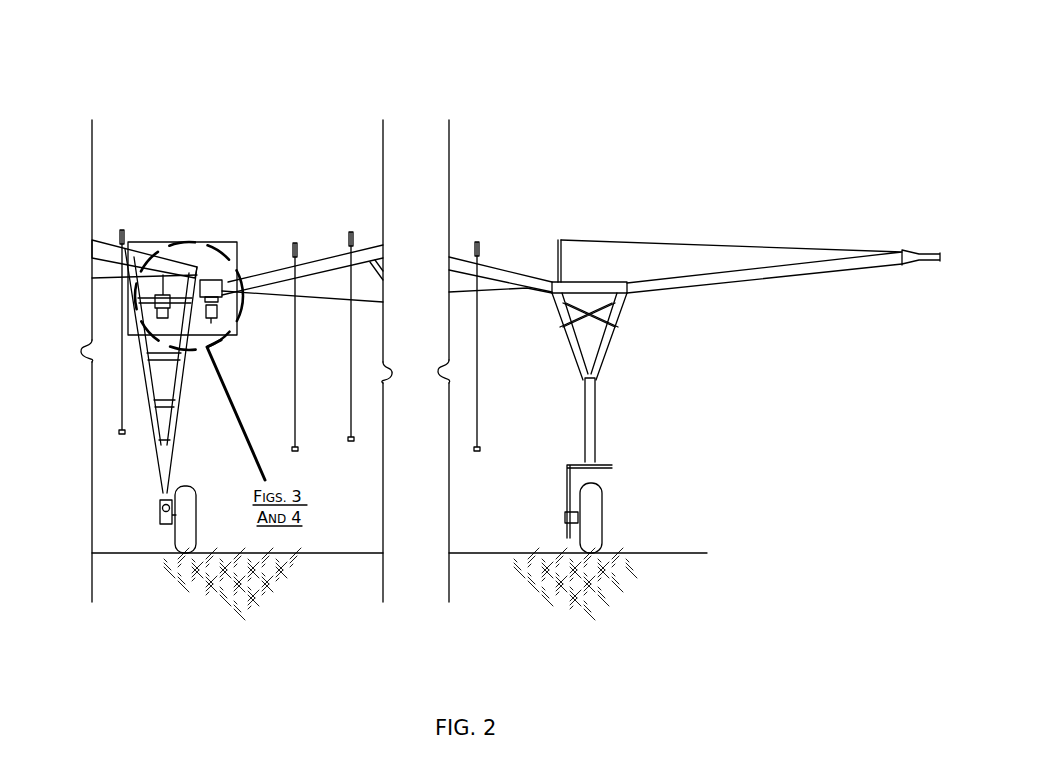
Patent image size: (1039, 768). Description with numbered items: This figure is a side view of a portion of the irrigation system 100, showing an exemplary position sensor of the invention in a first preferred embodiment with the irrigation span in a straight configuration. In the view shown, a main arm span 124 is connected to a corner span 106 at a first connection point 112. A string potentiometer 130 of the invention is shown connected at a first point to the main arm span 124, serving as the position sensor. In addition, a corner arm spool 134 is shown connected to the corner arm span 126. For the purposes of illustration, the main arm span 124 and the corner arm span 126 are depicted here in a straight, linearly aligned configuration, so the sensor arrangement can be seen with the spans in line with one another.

The irrigation system 100 is at (463, 58).
The corner span 106 is at (676, 194).
The first connection point 112 is at (212, 278).
The main arm span 124 is at (113, 247).
The corner arm span 126 is at (285, 272).
The string potentiometer 130 is at (140, 300).
The corner arm spool 134 is at (217, 303).